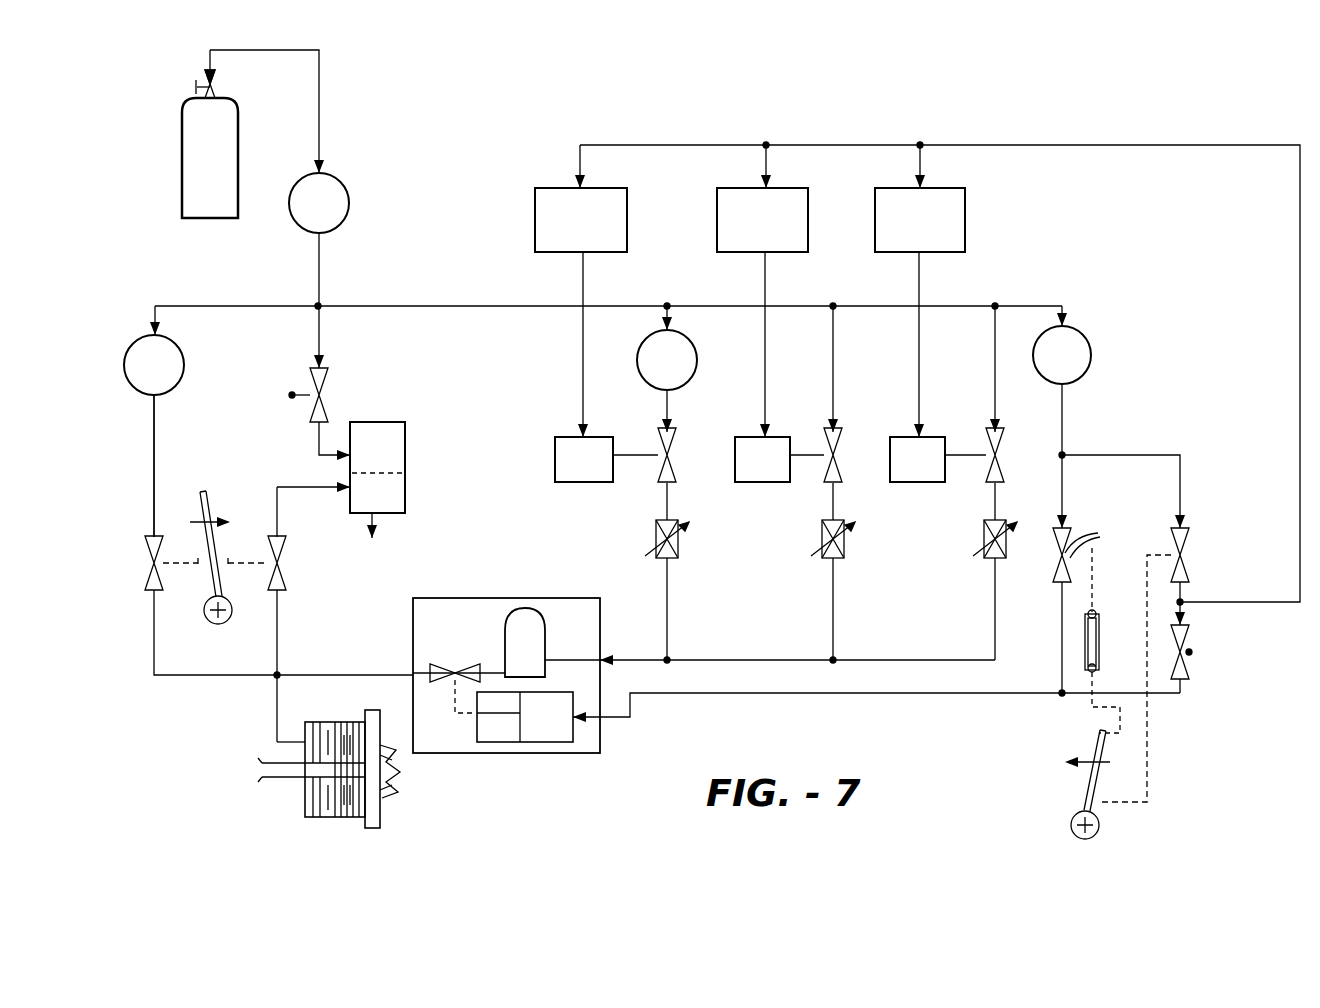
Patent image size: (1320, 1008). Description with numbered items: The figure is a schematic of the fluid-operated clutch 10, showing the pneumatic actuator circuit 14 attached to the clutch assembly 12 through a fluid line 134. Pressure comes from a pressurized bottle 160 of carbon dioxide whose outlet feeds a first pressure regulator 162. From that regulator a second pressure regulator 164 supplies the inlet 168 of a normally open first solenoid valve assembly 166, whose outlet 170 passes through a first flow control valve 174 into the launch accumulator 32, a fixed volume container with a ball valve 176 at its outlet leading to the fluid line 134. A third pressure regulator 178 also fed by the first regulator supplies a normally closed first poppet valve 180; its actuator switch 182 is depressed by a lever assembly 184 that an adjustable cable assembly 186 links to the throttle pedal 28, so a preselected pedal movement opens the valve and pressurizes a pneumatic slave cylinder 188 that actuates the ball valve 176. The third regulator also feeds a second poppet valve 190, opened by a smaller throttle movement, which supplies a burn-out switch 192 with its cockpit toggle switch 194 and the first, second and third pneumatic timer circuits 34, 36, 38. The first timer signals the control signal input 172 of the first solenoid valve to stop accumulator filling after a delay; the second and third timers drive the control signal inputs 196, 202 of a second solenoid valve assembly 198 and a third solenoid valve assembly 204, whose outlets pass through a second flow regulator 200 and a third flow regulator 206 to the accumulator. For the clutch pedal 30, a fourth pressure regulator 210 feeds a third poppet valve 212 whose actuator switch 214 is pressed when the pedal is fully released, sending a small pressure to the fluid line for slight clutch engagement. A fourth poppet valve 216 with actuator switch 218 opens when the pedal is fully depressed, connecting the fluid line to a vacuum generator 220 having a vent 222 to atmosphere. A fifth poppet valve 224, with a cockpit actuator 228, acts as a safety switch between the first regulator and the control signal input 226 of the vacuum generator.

The fluid-operated clutch 10 is at (145, 710).
The clutch assembly 12 is at (292, 803).
The pneumatic actuator circuit 14 is at (142, 479).
The throttle pedal 28 is at (1082, 790).
The clutch pedal 30 is at (208, 512).
The launch accumulator 32 is at (525, 615).
The first pneumatic timer circuit 34 is at (553, 188).
The second pneumatic timer circuit 36 is at (730, 188).
The third pneumatic timer circuit 38 is at (888, 188).
The fluid line 134 is at (288, 740).
The pressurized bottle 160 is at (198, 122).
The first pressure regulator 162 is at (335, 182).
The second pressure regulator 164 is at (678, 340).
The first solenoid valve assembly 166 is at (632, 478).
The inlet 168 is at (668, 420).
The outlet 170 is at (670, 470).
The control signal input 172 is at (583, 390).
The first flow control valve 174 is at (680, 548).
The ball valve 176 is at (455, 673).
The third pressure regulator 178 is at (1078, 333).
The first poppet valve 180 is at (1082, 525).
The actuator switch 182 is at (1100, 540).
The lever assembly 184 is at (1095, 540).
The adjustable cable assembly 186 is at (1085, 645).
The pneumatic slave cylinder 188 is at (530, 735).
The second poppet valve 190 is at (1200, 553).
The burn-out switch 192 is at (1198, 668).
The toggle switch 194 is at (1192, 652).
The control signal input 196 is at (766, 378).
The second solenoid valve assembly 198 is at (810, 474).
The second flow regulator 200 is at (852, 548).
The control signal input 202 is at (919, 405).
The third solenoid valve assembly 204 is at (970, 476).
The third flow regulator 206 is at (985, 552).
The fourth pressure regulator 210 is at (135, 345).
The third poppet valve 212 is at (145, 565).
The actuator switch 214 is at (164, 570).
The fourth poppet valve 216 is at (288, 560).
The actuator switch 218 is at (266, 568).
The vacuum generator 220 is at (390, 487).
The vent 222 is at (380, 520).
The fifth poppet valve 224 is at (338, 385).
The control signal input 226 is at (325, 455).
The actuator 228 is at (290, 395).